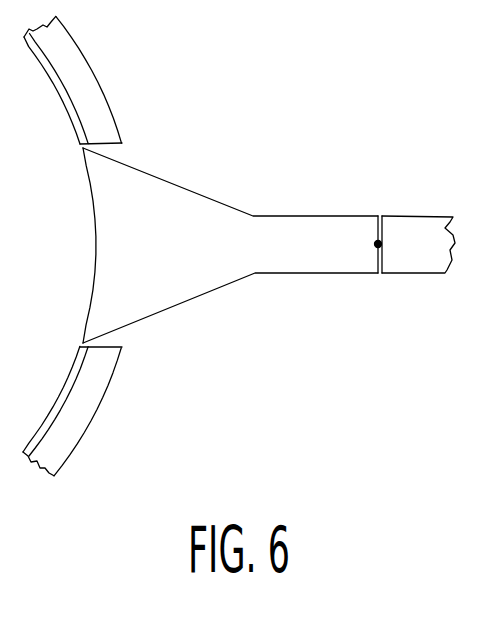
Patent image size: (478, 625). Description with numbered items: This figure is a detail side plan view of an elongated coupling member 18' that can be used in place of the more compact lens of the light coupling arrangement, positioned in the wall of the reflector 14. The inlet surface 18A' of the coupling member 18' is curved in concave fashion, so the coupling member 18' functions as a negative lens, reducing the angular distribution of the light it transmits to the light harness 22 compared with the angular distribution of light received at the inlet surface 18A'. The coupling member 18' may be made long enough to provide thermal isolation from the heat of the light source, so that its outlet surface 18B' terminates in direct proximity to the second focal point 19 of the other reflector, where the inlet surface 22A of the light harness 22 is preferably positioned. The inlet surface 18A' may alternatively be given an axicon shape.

The reflector 14 is at (97, 92).
The elongated coupling member 18' is at (230, 243).
The inlet surface 18A' is at (64, 245).
The outlet surface 18B' is at (345, 277).
The second focal point 19 is at (375, 243).
The light harness 22 is at (422, 217).
The inlet surface of light harness 22A is at (385, 255).